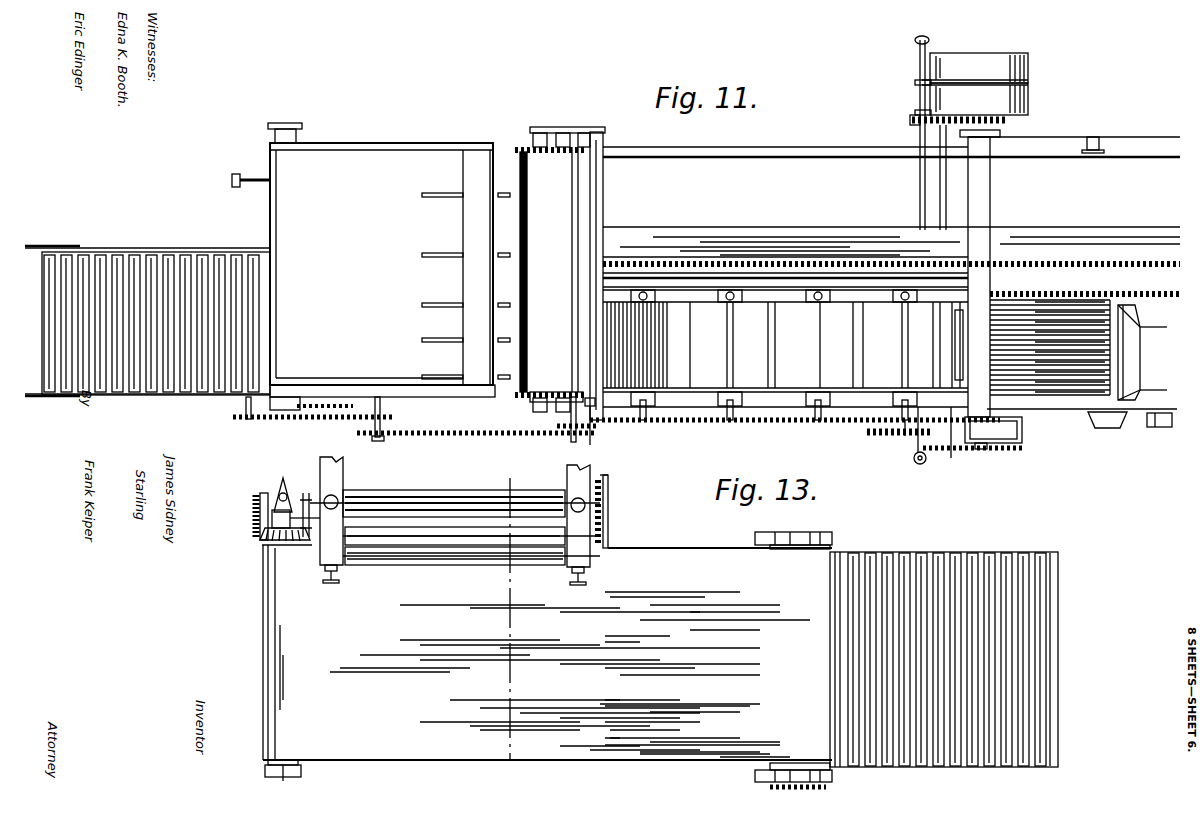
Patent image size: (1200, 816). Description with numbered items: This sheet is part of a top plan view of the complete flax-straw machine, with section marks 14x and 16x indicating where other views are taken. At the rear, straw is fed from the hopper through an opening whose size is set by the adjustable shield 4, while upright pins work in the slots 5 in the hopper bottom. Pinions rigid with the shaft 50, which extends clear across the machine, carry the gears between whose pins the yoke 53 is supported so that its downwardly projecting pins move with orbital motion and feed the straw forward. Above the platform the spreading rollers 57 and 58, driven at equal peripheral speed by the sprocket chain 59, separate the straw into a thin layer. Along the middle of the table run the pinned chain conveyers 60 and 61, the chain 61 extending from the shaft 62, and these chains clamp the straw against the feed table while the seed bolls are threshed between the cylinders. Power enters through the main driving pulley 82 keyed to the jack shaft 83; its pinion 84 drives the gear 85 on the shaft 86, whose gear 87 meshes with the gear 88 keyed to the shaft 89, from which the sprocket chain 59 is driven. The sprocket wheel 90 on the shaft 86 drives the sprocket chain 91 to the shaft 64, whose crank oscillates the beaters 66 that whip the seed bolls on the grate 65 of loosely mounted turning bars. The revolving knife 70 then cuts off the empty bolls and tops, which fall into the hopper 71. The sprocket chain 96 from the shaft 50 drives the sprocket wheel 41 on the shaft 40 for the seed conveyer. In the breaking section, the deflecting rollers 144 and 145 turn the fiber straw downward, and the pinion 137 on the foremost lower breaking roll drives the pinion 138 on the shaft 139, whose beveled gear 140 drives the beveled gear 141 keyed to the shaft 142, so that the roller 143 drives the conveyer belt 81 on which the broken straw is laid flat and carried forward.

In FIG. 11, the adjustable shield 4 is at (379, 160).
In FIG. 11, the slots 5 is at (437, 198).
In FIG. 11, the shaft 50 is at (572, 205).
In FIG. 11, the yoke 53 is at (527, 260).
In FIG. 11, the spreading roller 57 is at (600, 328).
In FIG. 11, the shaft 62 is at (592, 403).
In FIG. 11, the spreading roller 58 is at (650, 333).
In FIG. 11, the carriage 16x is at (826, 345).
In FIG. 11, the sprocket chain 59 is at (776, 421).
In FIG. 11, the shaft 40 is at (383, 428).
In FIG. 11, the sprocket chain 96 is at (472, 436).
In FIG. 11, the sprocket wheel 41 is at (372, 440).
In FIG. 11, the chain conveyer 61 is at (1122, 264).
In FIG. 11, the chain conveyer 60 is at (1130, 289).
In FIG. 11, the shaft 86 is at (940, 189).
In FIG. 11, the jack shaft 83 is at (980, 52).
In FIG. 11, the main driving pulley 82 is at (1030, 96).
In FIG. 11, the pinion 84 is at (1000, 120).
In FIG. 11, the gear 85 is at (912, 123).
In FIG. 11, the beaters 66 is at (1055, 385).
In FIG. 11, the grate 65 is at (1090, 385).
In FIG. 11, the revolving knife 70 is at (1142, 352).
In FIG. 11, the hopper 71 is at (1140, 420).
In FIG. 11, the box 14x is at (1022, 433).
In FIG. 11, the shaft 64 is at (1022, 449).
In FIG. 11, the gear 88 is at (867, 434).
In FIG. 11, the shaft 89 is at (905, 436).
In FIG. 11, the gear 87 is at (913, 459).
In FIG. 11, the sprocket wheel 90 is at (950, 455).
In FIG. 11, the sprocket chain 91 is at (982, 450).
In FIG. 13, the conveyer belt 81 is at (263, 613).
In FIG. 13, the pinion 137 is at (328, 470).
In FIG. 13, the deflecting roller 145 is at (382, 532).
In FIG. 13, the deflecting roller 144 is at (423, 556).
In FIG. 13, the beveled gear 140 is at (258, 510).
In FIG. 13, the shaft 139 is at (282, 478).
In FIG. 13, the pinion 138 is at (310, 540).
In FIG. 13, the beveled gear 141 is at (265, 543).
In FIG. 13, the shaft 142 is at (282, 548).
In FIG. 13, the roller 143 is at (265, 760).